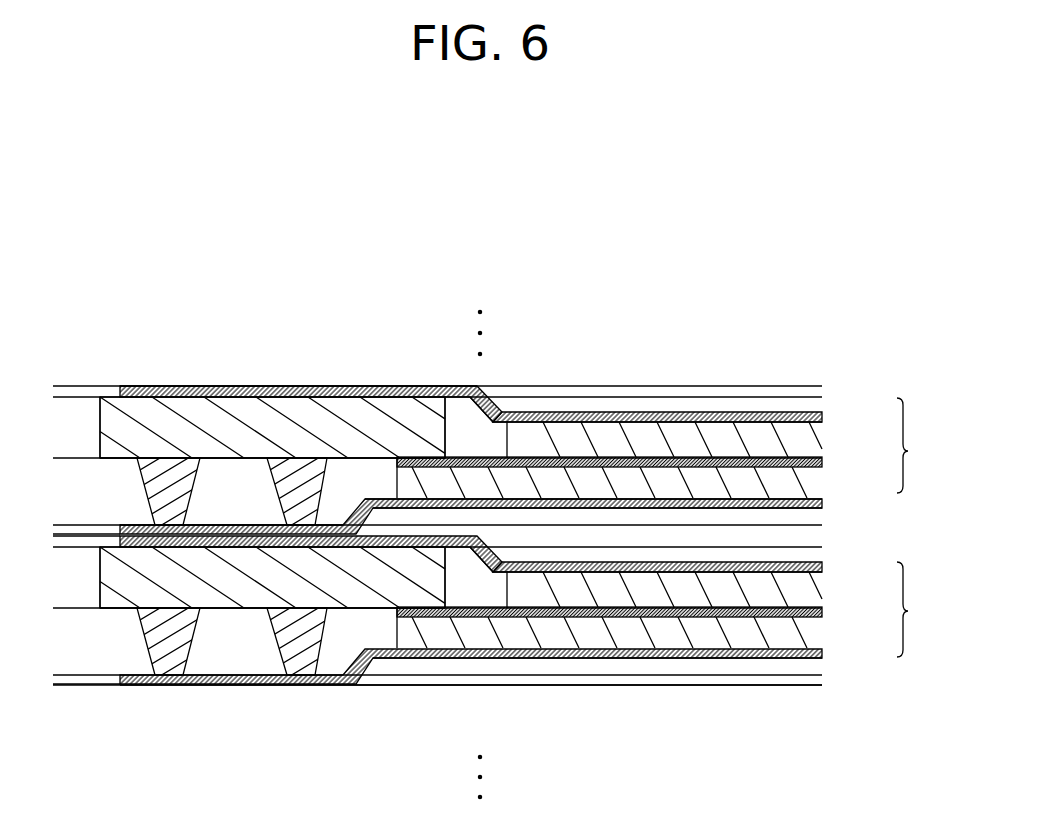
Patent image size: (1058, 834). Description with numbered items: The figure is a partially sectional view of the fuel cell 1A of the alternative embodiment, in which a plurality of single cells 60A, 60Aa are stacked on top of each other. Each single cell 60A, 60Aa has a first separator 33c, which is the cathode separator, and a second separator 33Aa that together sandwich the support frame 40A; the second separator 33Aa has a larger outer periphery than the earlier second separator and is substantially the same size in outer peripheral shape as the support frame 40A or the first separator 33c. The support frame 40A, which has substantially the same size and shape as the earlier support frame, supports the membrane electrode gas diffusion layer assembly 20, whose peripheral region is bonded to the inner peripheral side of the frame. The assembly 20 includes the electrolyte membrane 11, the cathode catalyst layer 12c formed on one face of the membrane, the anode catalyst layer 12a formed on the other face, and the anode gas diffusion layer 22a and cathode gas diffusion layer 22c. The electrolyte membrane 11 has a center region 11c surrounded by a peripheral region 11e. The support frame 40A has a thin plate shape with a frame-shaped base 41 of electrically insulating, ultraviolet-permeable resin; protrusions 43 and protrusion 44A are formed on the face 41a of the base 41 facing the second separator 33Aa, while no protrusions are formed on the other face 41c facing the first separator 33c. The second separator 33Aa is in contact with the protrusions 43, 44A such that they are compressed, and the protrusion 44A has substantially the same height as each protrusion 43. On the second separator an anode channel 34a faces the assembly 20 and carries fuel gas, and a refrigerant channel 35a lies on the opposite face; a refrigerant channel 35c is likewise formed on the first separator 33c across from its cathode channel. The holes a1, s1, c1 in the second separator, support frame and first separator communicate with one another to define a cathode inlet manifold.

The fuel cell 1A is at (828, 296).
The single cell 60A is at (850, 341).
The single cell 60Aa is at (841, 705).
The membrane electrode gas diffusion layer assembly 20 is at (916, 527).
The electrolyte membrane 11 is at (822, 452).
The center region 11c is at (565, 452).
The peripheral region 11e is at (472, 455).
The anode catalyst layer 12a is at (822, 468).
The cathode catalyst layer 12c is at (822, 443).
The anode gas diffusion layer 22a is at (818, 477).
The cathode gas diffusion layer 22c is at (824, 425).
The cathode separator 33c is at (822, 390).
The second separator 33Aa is at (822, 502).
The anode channel 34a is at (807, 515).
The refrigerant channel 35a is at (688, 668).
The refrigerant channel 35c is at (713, 403).
The support frame 40A is at (89, 464).
The base 41 is at (122, 448).
The face 41a is at (260, 463).
The face 41c is at (246, 386).
The protrusion 43 is at (185, 475).
The protrusion 44A is at (323, 468).
The hole a1 is at (55, 526).
The hole c1 is at (75, 385).
The hole s1 is at (62, 455).